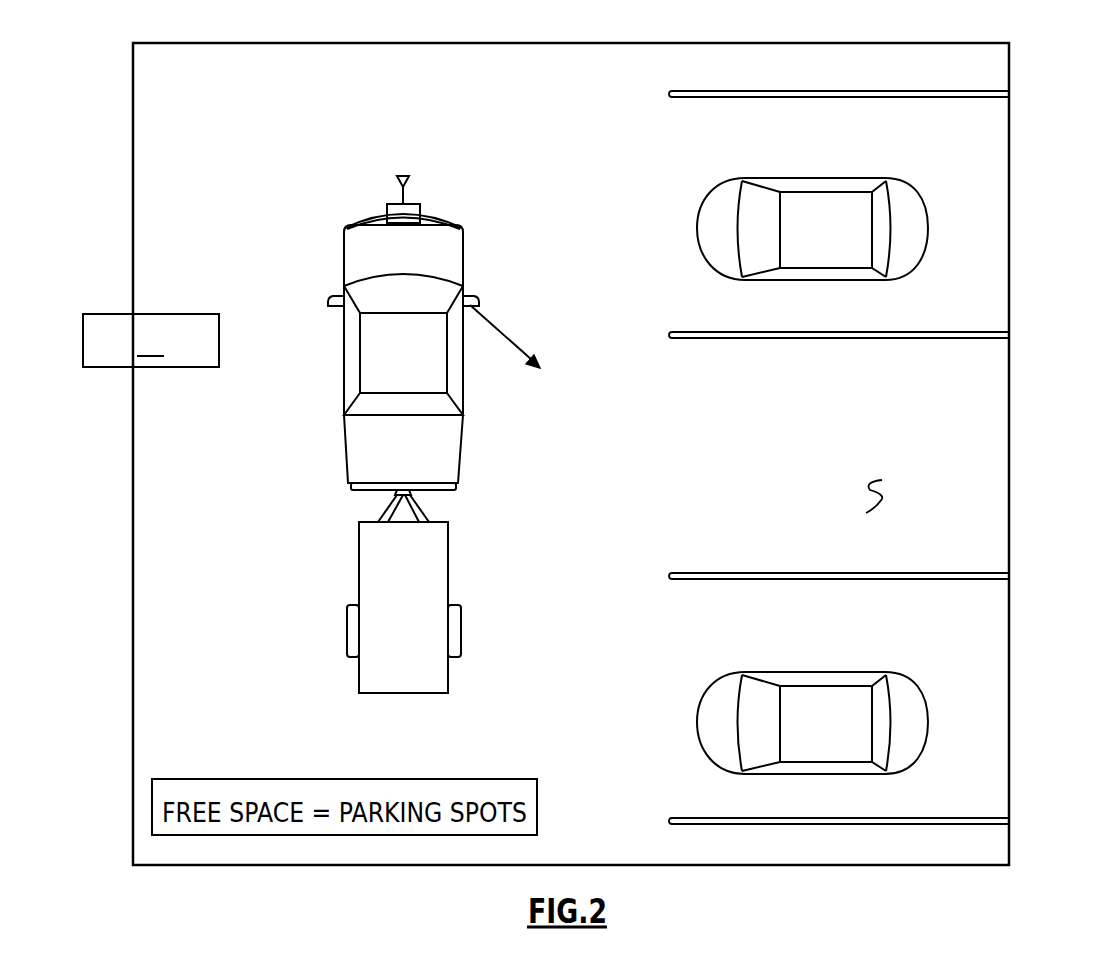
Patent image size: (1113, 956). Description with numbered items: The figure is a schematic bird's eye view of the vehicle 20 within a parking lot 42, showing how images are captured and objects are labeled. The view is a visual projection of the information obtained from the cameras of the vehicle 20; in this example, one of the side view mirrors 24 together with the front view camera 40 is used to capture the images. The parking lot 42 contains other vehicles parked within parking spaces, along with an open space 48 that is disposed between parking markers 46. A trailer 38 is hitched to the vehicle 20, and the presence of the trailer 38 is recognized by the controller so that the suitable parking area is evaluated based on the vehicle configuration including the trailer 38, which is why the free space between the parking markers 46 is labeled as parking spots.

The vehicle 20 is at (355, 340).
The side view mirror camera 24 is at (470, 300).
The trailer 38 is at (390, 607).
The front view camera 40 is at (403, 175).
The parking lot 42 is at (614, 82).
The parking markers 46 is at (935, 338).
The open space 48 is at (881, 497).